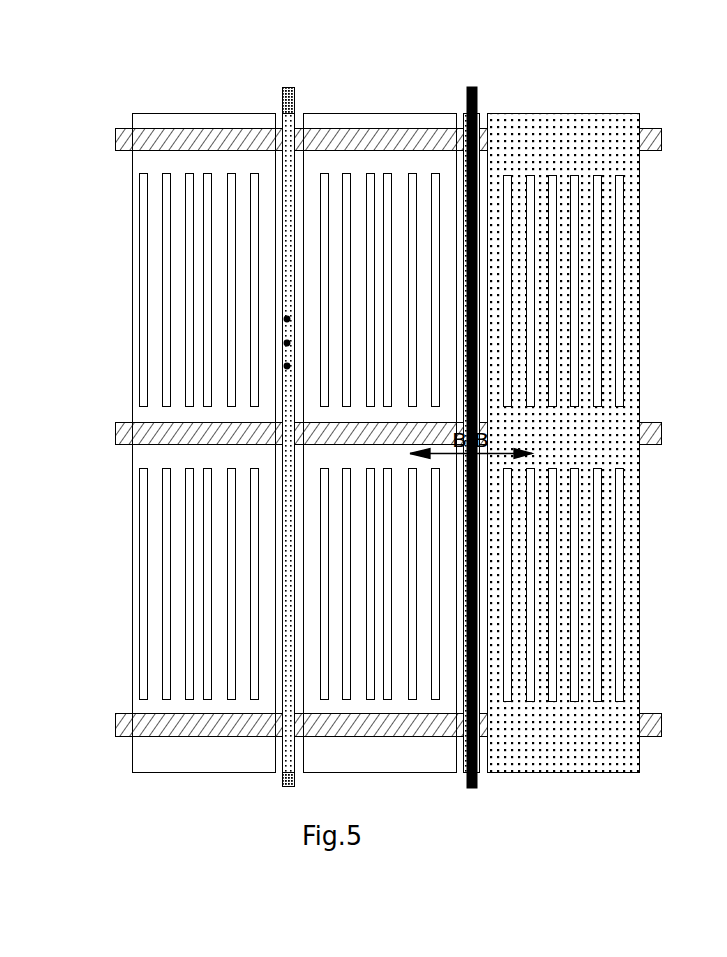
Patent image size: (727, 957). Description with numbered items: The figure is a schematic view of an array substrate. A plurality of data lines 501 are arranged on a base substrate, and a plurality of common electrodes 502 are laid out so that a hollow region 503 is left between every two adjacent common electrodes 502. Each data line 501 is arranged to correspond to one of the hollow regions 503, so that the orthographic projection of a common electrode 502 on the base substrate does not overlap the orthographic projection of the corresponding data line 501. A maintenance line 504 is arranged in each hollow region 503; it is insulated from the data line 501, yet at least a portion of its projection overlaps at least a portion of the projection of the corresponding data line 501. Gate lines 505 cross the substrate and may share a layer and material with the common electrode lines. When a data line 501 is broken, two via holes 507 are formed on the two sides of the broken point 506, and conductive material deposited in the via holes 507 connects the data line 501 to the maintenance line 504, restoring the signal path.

The data line 501 is at (477, 93).
The common electrode 502 is at (181, 123).
The hollow region 503 is at (298, 117).
The maintenance line 504 is at (282, 115).
The gate line 505 is at (115, 138).
The broken point 506 is at (283, 343).
The via hole 507 is at (283, 318).